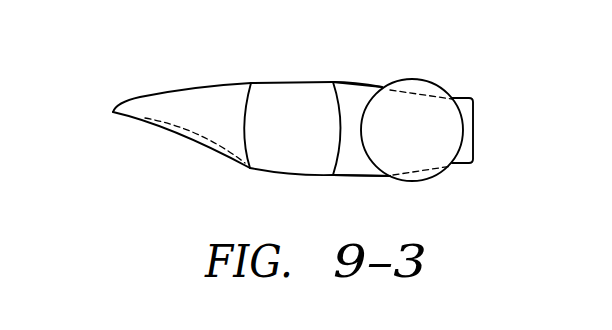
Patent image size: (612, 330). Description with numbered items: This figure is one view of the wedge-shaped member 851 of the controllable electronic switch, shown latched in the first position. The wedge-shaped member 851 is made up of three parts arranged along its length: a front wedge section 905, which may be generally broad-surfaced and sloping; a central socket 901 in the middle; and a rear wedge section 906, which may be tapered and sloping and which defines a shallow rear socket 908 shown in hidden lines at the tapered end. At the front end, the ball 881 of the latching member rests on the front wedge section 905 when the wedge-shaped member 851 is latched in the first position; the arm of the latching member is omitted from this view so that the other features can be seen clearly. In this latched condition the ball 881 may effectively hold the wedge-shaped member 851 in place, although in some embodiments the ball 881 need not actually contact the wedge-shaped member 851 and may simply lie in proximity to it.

The wedge-shaped member 851 is at (148, 63).
The rear wedge section 906 is at (210, 83).
The shallow rear socket 908 is at (193, 127).
The central socket 901 is at (290, 160).
The front wedge section 905 is at (353, 95).
The ball 881 is at (428, 80).